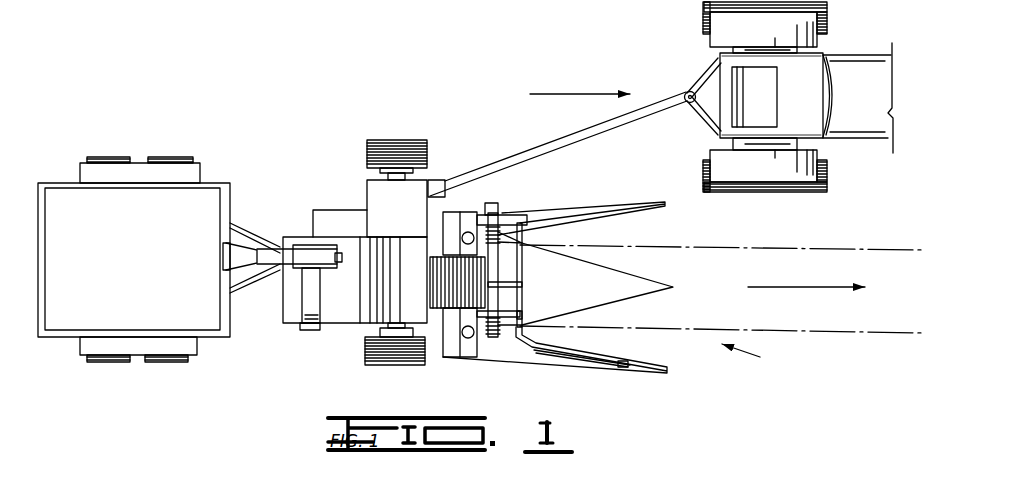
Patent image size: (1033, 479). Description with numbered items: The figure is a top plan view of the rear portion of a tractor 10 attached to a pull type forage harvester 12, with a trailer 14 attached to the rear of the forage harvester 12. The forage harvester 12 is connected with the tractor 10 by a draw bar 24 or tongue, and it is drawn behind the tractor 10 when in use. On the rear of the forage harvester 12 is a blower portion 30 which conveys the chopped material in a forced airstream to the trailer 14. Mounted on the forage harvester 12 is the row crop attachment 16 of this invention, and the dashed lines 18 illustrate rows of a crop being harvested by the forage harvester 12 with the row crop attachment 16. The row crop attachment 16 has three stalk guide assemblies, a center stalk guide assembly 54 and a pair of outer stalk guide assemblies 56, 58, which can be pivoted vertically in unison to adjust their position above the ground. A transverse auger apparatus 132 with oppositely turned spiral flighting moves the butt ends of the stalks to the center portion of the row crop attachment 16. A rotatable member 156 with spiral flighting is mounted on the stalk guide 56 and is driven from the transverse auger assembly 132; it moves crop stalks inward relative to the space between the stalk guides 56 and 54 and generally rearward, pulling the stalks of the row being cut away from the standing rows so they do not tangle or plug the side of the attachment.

The tractor 10 is at (855, 68).
The forage harvester 12 is at (380, 200).
The trailer 14 is at (108, 195).
The row crop attachment 16 is at (755, 360).
The rows of a crop 18 is at (803, 247).
The draw bar 24 is at (507, 158).
The blower portion 30 is at (308, 317).
The center stalk guide assembly 54 is at (628, 302).
The outer stalk guide assembly 56 is at (634, 376).
The outer stalk guide assembly 58 is at (648, 196).
The transverse auger apparatus 132 is at (506, 224).
The rotatable member 156 is at (588, 345).